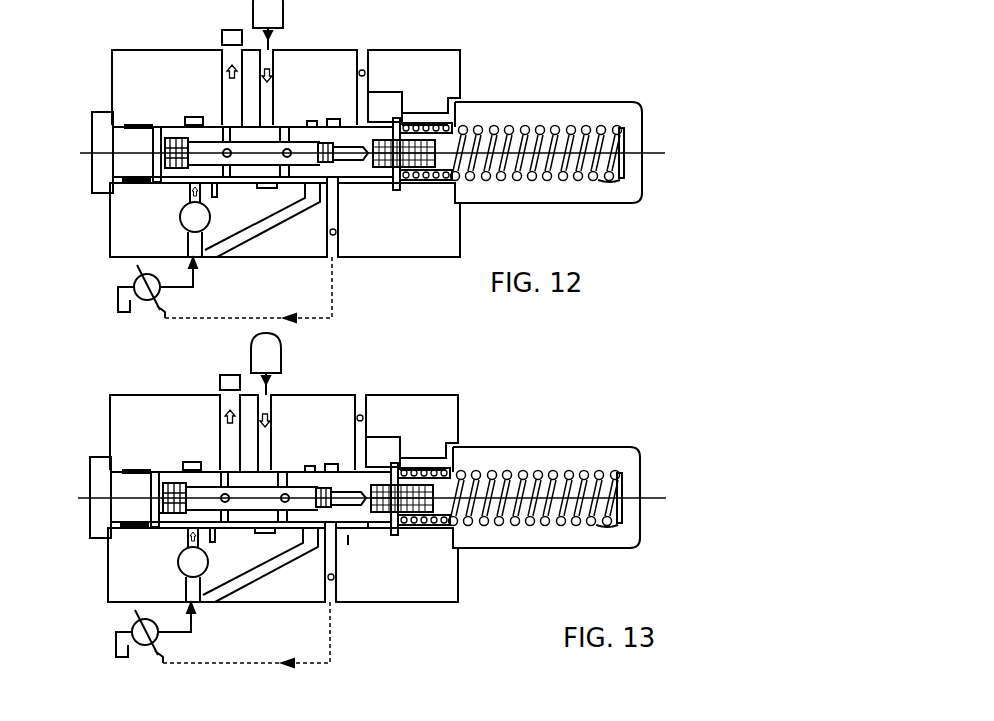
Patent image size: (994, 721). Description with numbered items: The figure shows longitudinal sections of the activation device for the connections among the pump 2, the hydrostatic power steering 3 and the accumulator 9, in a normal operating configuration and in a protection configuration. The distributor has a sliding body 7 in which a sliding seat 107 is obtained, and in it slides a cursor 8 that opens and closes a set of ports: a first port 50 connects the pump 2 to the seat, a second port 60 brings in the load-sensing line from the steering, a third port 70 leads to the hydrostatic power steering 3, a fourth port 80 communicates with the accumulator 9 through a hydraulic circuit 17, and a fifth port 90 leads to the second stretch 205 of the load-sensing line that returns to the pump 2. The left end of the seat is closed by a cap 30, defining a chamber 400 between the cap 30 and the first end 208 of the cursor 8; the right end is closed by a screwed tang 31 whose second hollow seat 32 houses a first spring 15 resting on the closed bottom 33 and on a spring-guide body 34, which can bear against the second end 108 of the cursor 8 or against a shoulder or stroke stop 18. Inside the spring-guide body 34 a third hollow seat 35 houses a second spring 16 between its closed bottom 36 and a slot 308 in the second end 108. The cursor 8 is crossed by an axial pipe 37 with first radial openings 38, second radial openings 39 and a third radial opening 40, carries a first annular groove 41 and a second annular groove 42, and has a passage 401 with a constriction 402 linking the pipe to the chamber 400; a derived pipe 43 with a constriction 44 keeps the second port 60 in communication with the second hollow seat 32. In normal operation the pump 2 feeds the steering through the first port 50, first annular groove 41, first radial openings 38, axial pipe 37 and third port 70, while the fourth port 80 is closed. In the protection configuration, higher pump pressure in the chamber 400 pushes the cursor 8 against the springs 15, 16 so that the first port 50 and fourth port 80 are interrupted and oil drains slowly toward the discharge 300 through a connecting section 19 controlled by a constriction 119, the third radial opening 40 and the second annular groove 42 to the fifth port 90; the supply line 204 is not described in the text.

In FIG. 12, the pump 2 is at (128, 278).
In FIG. 13, the pump 2 is at (133, 633).
In FIG. 12, the hydrostatic power steering 3 is at (220, 42).
In FIG. 13, the hydrostatic power steering 3 is at (201, 357).
In FIG. 12, the sliding body 7 is at (423, 262).
In FIG. 13, the sliding body 7 is at (431, 590).
In FIG. 12, the cursor 8 is at (322, 135).
In FIG. 13, the cursor 8 is at (328, 445).
In FIG. 12, the accumulator 9 is at (283, 14).
In FIG. 13, the accumulator 9 is at (278, 361).
In FIG. 12, the first spring 15 is at (512, 143).
In FIG. 13, the first spring 15 is at (550, 476).
In FIG. 12, the second spring 16 is at (418, 140).
In FIG. 13, the second spring 16 is at (402, 539).
In FIG. 12, the hydraulic circuit 17 is at (250, 45).
In FIG. 13, the hydraulic circuit 17 is at (241, 396).
In FIG. 13, the shoulder or stroke stop 18 is at (425, 434).
In FIG. 13, the connecting section 19 is at (407, 582).
In FIG. 12, the cap 30 is at (98, 128).
In FIG. 13, the cap 30 is at (89, 473).
In FIG. 12, the tang 31 is at (560, 115).
In FIG. 13, the tang 31 is at (534, 462).
In FIG. 12, the second hollow seat 32 is at (595, 150).
In FIG. 13, the second hollow seat 32 is at (568, 459).
In FIG. 12, the closed bottom 33 is at (565, 182).
In FIG. 13, the closed bottom 33 is at (629, 559).
In FIG. 12, the spring-guide body 34 is at (440, 140).
In FIG. 13, the spring-guide body 34 is at (446, 471).
In FIG. 13, the third hollow seat 35 is at (383, 542).
In FIG. 13, the closed bottom 36 is at (453, 555).
In FIG. 13, the axial pipe 37 is at (260, 565).
In FIG. 13, the first radial openings 38 is at (247, 548).
In FIG. 13, the second radial openings 39 is at (310, 438).
In FIG. 13, the third radial opening 40 is at (355, 402).
In FIG. 12, the first annular groove 41 is at (214, 190).
In FIG. 13, the first annular groove 41 is at (208, 486).
In FIG. 13, the second annular groove 42 is at (382, 594).
In FIG. 12, the derived pipe 43 is at (412, 100).
In FIG. 13, the derived pipe 43 is at (438, 410).
In FIG. 12, the constriction 44 is at (385, 107).
In FIG. 13, the constriction 44 is at (427, 392).
In FIG. 12, the first port 50 is at (188, 242).
In FIG. 13, the first port 50 is at (169, 565).
In FIG. 12, the second port 60 is at (368, 64).
In FIG. 13, the second port 60 is at (412, 409).
In FIG. 12, the third port 70 is at (230, 97).
In FIG. 13, the third port 70 is at (168, 432).
In FIG. 12, the fourth port 80 is at (263, 102).
In FIG. 13, the fourth port 80 is at (313, 407).
In FIG. 12, the fifth port 90 is at (333, 200).
In FIG. 13, the fifth port 90 is at (357, 594).
In FIG. 12, the sliding seat 107 is at (380, 177).
In FIG. 13, the sliding seat 107 is at (219, 497).
In FIG. 13, the second end 108 is at (470, 421).
In FIG. 13, the constriction 119 is at (321, 608).
In FIG. 12, the supply line 204 is at (160, 218).
In FIG. 13, the supply line 204 is at (186, 565).
In FIG. 12, the second stretch 205 is at (222, 318).
In FIG. 13, the second stretch 205 is at (196, 638).
In FIG. 12, the first end 208 is at (157, 170).
In FIG. 13, the first end 208 is at (240, 436).
In FIG. 12, the discharge 300 is at (63, 6).
In FIG. 13, the discharge 300 is at (75, 340).
In FIG. 13, the slot 308 is at (411, 376).
In FIG. 12, the chamber 400 is at (155, 130).
In FIG. 13, the chamber 400 is at (158, 446).
In FIG. 12, the passage 401 is at (170, 152).
In FIG. 13, the passage 401 is at (149, 494).
In FIG. 13, the constriction 402 is at (116, 531).